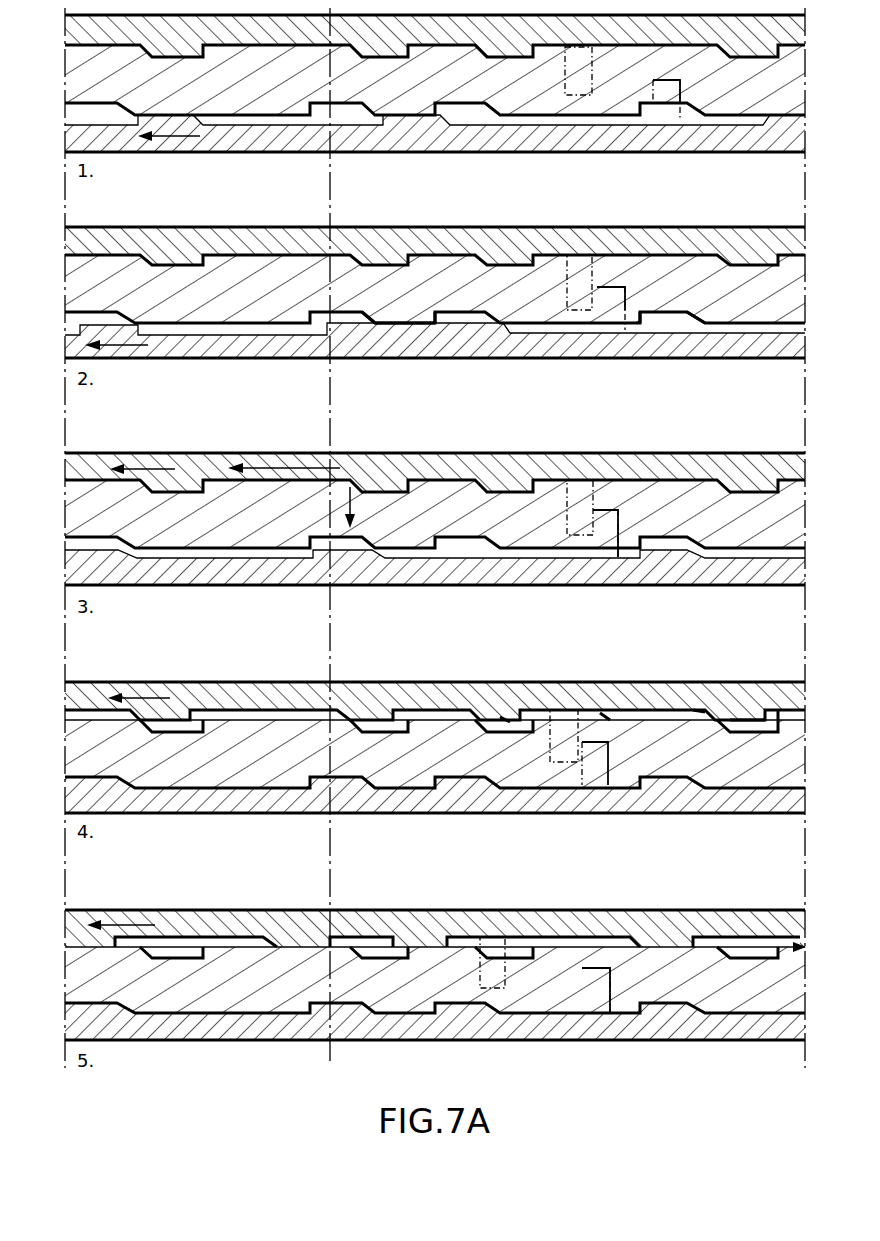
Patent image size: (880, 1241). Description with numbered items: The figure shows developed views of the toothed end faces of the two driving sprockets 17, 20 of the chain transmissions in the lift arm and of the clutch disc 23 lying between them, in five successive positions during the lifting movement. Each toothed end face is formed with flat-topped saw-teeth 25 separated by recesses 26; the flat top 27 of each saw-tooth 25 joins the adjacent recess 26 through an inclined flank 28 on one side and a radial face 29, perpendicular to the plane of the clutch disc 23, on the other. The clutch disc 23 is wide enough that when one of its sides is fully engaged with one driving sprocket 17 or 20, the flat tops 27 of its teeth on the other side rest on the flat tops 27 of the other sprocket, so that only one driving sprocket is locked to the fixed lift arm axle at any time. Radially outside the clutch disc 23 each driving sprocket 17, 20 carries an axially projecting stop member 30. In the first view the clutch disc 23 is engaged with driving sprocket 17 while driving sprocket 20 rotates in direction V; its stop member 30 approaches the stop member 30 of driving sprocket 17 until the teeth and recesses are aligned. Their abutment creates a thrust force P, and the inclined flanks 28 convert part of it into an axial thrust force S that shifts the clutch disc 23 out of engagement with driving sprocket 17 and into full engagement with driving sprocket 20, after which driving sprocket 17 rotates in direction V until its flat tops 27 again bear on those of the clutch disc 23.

The driving sprocket 17 is at (700, 25).
The driving sprocket 20 is at (760, 115).
The clutch disc 23 is at (617, 85).
The saw-tooth 25 is at (720, 313).
The recess 26 is at (640, 330).
The flat top 27 is at (413, 323).
The inclined flank 28 is at (360, 317).
The radial face 29 is at (445, 322).
The stop member 30 is at (545, 100).
The movement of the driving sprocket V is at (143, 927).
The thrust force P is at (300, 453).
The axially directed thrust force S is at (383, 487).